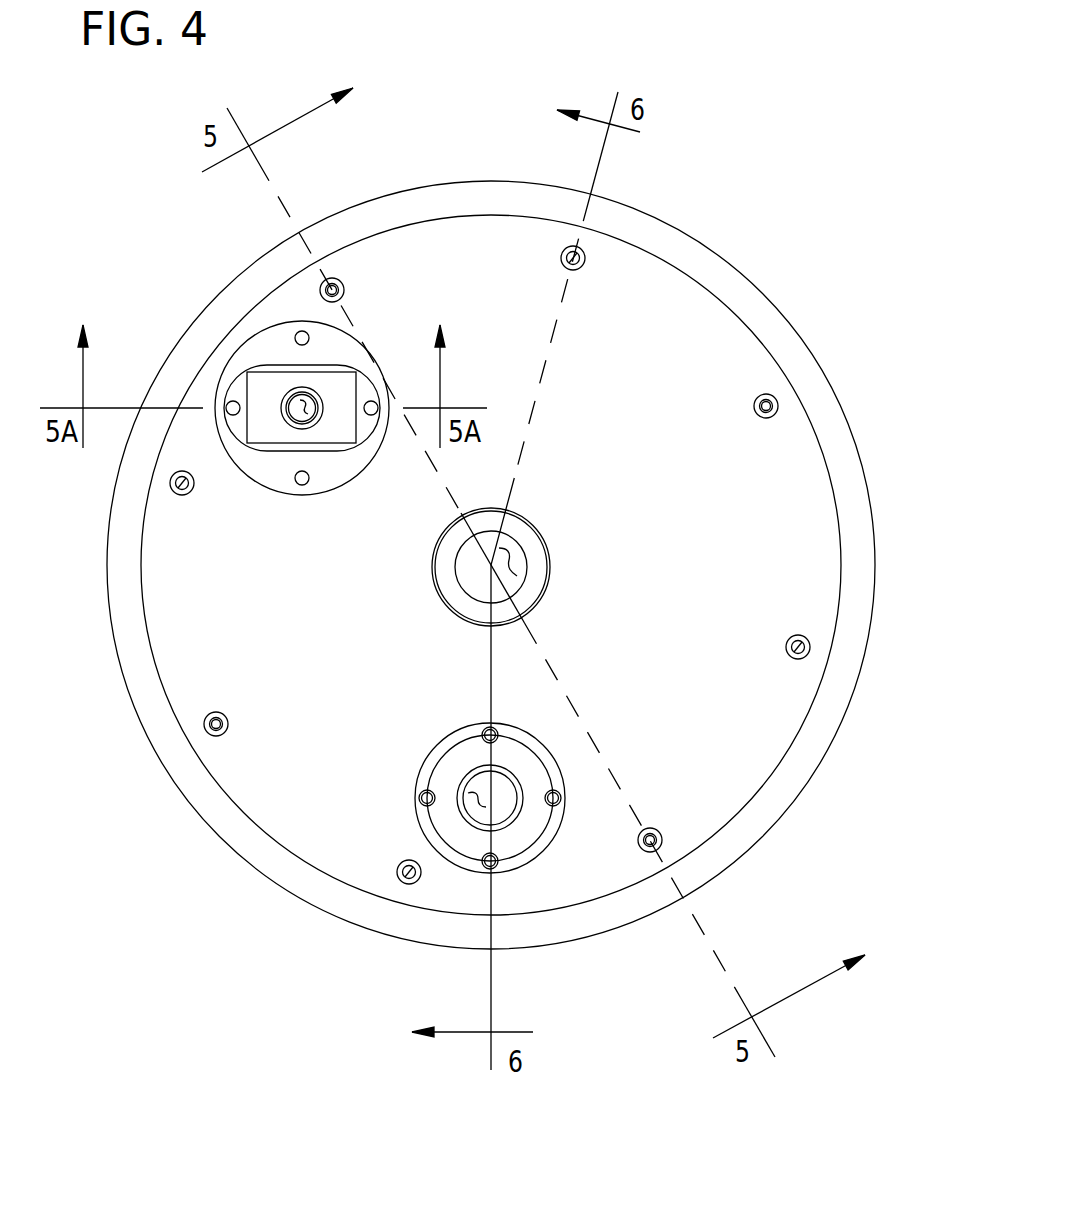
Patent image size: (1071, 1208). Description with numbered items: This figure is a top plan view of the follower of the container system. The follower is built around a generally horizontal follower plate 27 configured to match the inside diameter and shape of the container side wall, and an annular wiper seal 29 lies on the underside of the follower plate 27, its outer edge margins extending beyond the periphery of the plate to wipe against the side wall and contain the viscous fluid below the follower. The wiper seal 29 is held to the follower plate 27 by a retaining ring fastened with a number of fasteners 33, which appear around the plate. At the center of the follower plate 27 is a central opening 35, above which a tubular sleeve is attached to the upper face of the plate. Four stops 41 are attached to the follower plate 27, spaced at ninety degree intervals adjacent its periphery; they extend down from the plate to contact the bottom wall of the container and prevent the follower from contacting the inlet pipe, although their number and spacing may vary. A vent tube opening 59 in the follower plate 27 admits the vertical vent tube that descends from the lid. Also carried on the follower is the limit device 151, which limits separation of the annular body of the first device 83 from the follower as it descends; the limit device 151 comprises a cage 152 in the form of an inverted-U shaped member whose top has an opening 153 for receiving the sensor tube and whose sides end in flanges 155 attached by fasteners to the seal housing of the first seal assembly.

The follower plate 27 is at (300, 805).
The wiper seal 29 is at (848, 508).
The fasteners 33 is at (587, 253).
The central opening 35 is at (510, 562).
The stops 41 is at (331, 278).
The vent tube opening 59 is at (478, 798).
The first device 83 is at (298, 298).
The limit device 151 is at (247, 455).
The cage 152 is at (272, 435).
The opening 153 is at (298, 400).
The flanges 155 is at (365, 393).